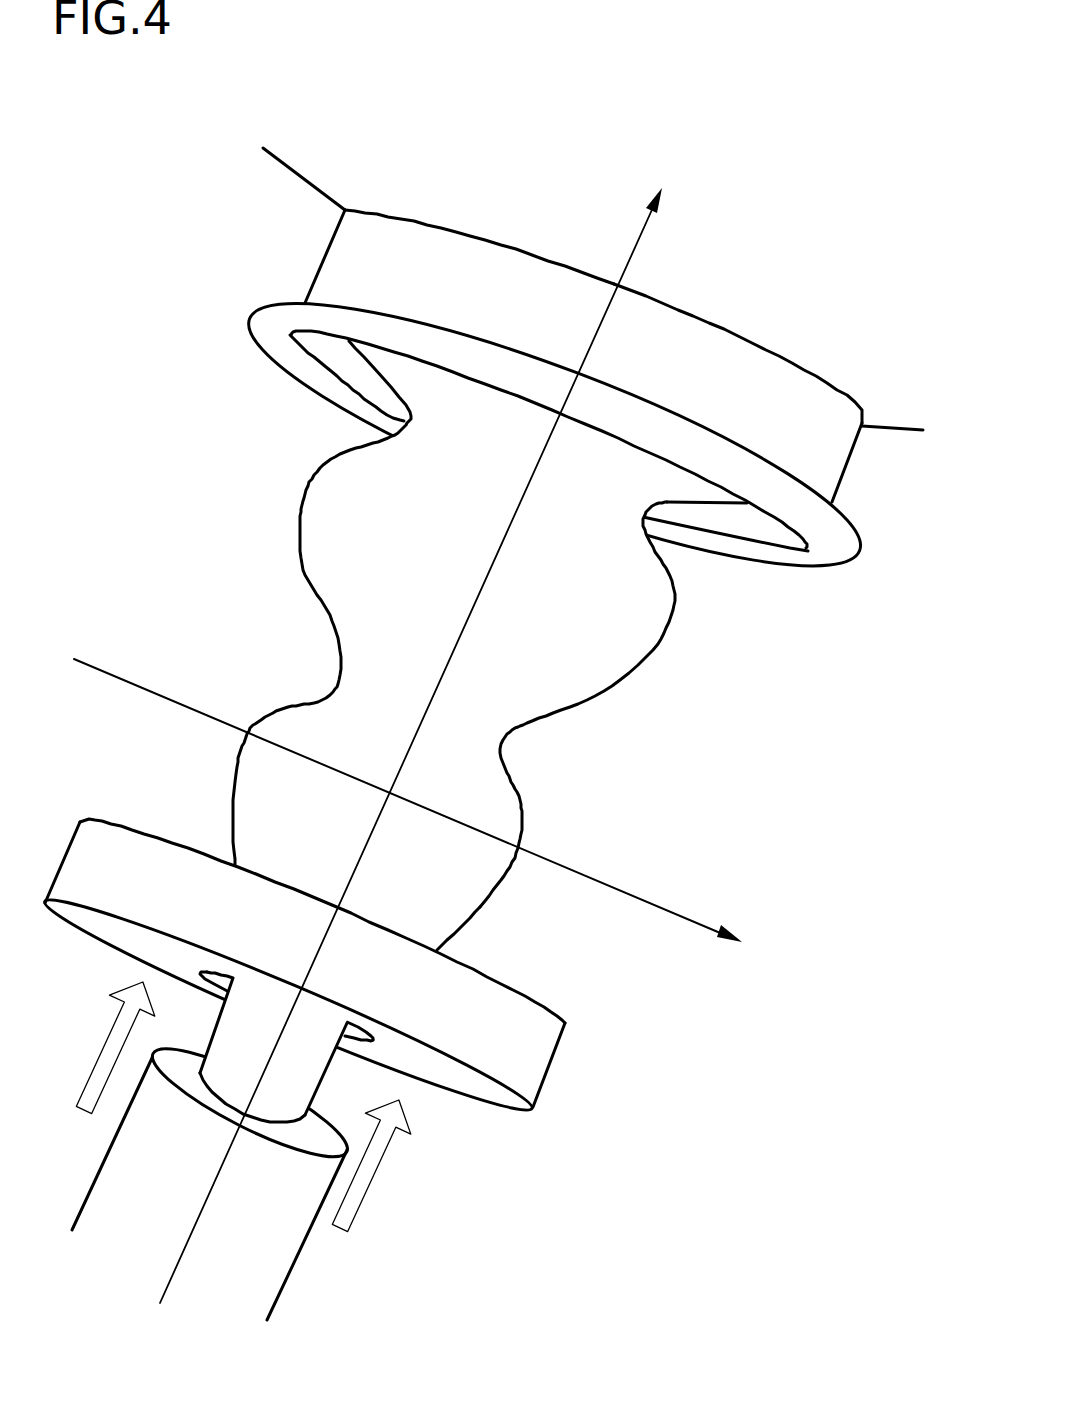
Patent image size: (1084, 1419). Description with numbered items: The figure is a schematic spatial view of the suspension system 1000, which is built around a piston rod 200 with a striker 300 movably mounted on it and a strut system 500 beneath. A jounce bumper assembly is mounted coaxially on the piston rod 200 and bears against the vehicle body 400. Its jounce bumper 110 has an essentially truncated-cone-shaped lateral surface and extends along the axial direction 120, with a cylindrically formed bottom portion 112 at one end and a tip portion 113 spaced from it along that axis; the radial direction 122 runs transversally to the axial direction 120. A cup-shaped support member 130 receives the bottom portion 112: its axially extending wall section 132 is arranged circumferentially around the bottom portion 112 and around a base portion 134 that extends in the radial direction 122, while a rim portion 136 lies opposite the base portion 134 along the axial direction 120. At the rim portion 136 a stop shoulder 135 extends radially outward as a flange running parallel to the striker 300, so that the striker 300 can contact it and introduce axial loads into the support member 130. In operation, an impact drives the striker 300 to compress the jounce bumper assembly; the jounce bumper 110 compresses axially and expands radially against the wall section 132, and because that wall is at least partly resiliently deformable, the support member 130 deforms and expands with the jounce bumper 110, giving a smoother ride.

The suspension system 1000 is at (150, 495).
The jounce bumper 110 is at (590, 735).
The bottom portion 112 is at (675, 484).
The tip portion 113 is at (423, 902).
The axial direction 120 is at (648, 223).
The radial direction 122 is at (712, 915).
The support member 130 is at (530, 223).
The wall section 132 is at (722, 332).
The base portion 134 is at (828, 457).
The stop shoulder 135 is at (833, 550).
The rim portion 136 is at (745, 562).
The piston rod 200 is at (297, 1063).
The striker 300 is at (533, 1048).
The vehicle body 400 is at (820, 370).
The strut system 500 is at (243, 1275).